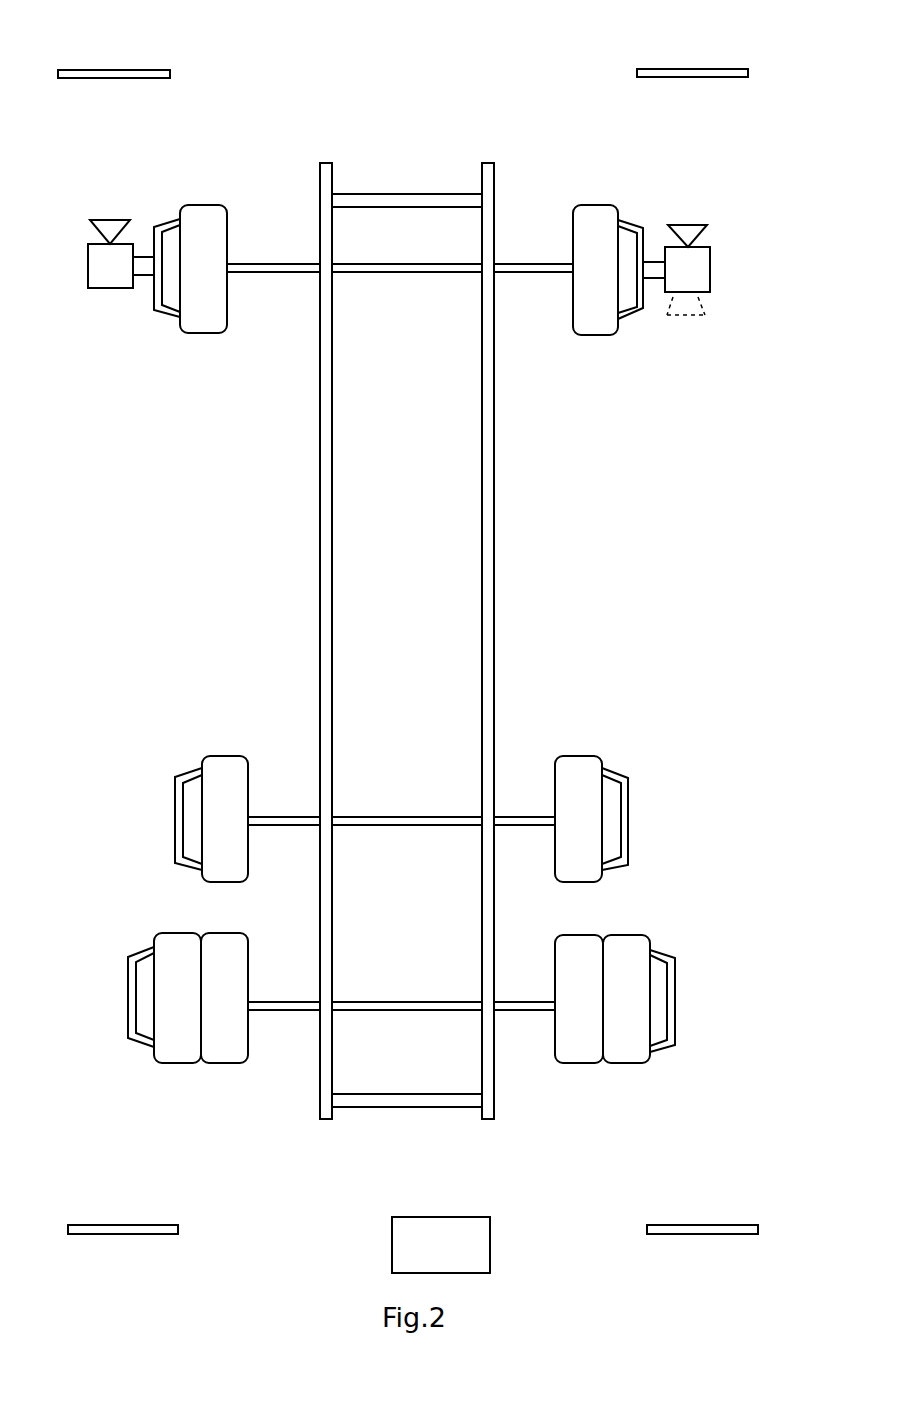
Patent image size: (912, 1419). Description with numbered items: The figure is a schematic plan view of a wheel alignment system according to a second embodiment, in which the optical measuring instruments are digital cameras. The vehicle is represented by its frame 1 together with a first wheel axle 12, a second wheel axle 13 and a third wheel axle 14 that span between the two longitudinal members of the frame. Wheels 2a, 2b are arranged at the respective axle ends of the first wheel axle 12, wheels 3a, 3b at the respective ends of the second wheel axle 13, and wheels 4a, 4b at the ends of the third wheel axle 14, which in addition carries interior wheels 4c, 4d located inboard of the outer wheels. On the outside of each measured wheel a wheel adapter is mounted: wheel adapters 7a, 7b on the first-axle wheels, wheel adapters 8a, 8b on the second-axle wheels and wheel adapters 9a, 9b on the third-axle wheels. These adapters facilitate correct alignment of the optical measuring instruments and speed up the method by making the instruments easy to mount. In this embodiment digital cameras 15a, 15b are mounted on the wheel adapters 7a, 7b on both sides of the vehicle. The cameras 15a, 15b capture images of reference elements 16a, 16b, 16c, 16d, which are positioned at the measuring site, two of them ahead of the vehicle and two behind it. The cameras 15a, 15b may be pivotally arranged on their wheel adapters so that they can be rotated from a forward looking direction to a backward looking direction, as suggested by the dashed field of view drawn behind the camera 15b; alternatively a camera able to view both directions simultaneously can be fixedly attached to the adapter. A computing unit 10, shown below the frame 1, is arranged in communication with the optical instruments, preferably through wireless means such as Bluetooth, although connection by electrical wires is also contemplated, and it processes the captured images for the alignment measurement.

The frame 1 is at (492, 174).
The wheel 2a is at (210, 320).
The wheel 2b is at (593, 330).
The wheel 3a is at (223, 765).
The wheel 3b is at (580, 768).
The wheel 4a is at (180, 942).
The wheel 4b is at (622, 1053).
The interior wheel 4c is at (228, 942).
The interior wheel 4d is at (577, 945).
The wheel adapter 7a is at (175, 222).
The wheel adapter 7b is at (632, 228).
The wheel adapter 8a is at (175, 797).
The wheel adapter 8b is at (628, 812).
The wheel adapter 9a is at (137, 950).
The wheel adapter 9b is at (658, 952).
The computing unit 10 is at (392, 1247).
The first wheel axle 12 is at (395, 273).
The second wheel axle 13 is at (392, 827).
The third wheel axle 14 is at (398, 1012).
The digital camera 15a is at (110, 270).
The digital camera 15b is at (697, 270).
The reference element 16a is at (138, 77).
The reference element 16b is at (695, 75).
The reference element 16c is at (123, 1228).
The reference element 16d is at (680, 1228).